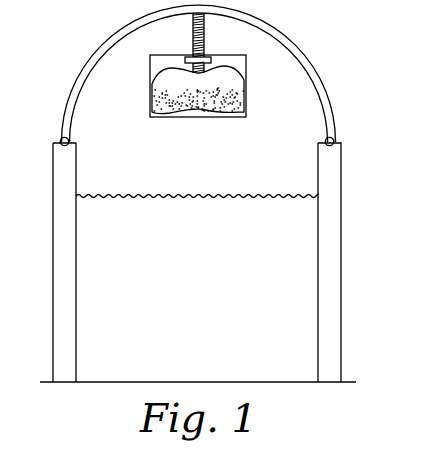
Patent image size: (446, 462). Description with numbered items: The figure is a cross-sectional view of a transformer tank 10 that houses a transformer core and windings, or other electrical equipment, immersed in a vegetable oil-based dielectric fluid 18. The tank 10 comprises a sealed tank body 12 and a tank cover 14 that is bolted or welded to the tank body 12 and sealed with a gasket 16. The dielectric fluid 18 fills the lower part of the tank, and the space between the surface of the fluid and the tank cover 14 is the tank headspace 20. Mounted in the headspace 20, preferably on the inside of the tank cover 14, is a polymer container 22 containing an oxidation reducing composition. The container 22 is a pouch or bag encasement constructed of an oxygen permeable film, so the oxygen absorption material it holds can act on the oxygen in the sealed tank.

The transformer tank 10 is at (336, 41).
The tank body 12 is at (341, 236).
The tank cover 14 is at (272, 26).
The gasket 16 is at (332, 139).
The dielectric fluid 18 is at (268, 194).
The tank headspace 20 is at (214, 166).
The polymer container 22 is at (244, 72).